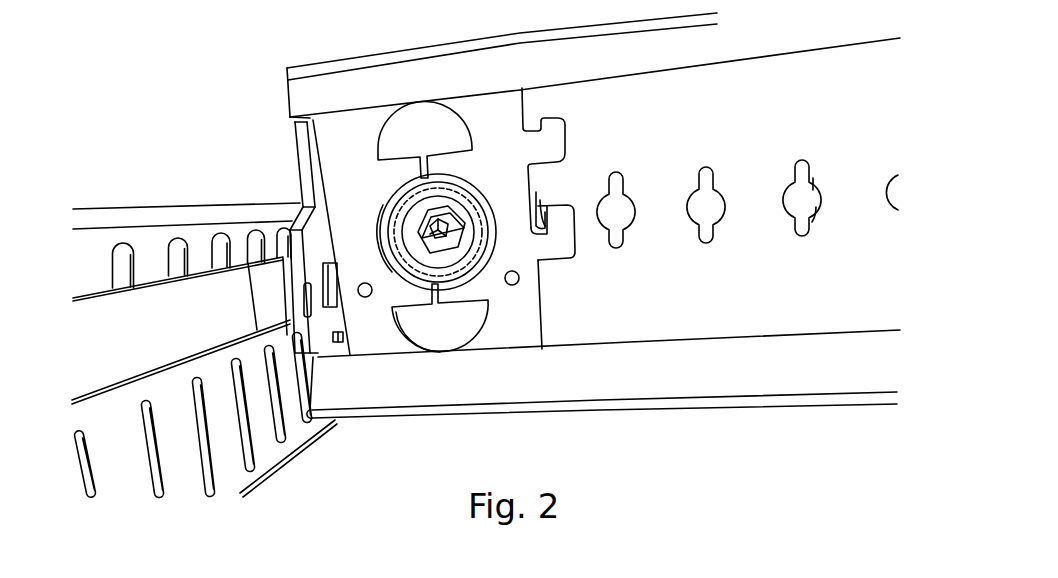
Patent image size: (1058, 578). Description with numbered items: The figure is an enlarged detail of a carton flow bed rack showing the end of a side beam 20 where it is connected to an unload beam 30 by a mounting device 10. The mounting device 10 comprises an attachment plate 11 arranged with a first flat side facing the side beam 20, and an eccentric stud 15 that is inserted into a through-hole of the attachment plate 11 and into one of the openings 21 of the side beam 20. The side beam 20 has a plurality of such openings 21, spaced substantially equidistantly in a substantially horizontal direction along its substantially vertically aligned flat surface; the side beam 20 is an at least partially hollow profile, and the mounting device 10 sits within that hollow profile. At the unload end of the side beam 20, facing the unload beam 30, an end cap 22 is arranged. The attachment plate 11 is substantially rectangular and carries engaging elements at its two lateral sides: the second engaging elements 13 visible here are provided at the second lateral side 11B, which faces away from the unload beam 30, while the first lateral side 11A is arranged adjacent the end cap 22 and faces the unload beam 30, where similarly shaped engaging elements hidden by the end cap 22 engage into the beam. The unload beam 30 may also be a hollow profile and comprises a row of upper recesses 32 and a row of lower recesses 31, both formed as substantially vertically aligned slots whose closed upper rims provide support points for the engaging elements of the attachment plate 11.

The mounting device 10 is at (350, 138).
The attachment plate 11 is at (532, 329).
The first lateral side of the attachment plate 11A is at (333, 206).
The second lateral side of the attachment plate 11B is at (538, 288).
The second engaging elements 13 is at (562, 143).
The eccentric stud 15 is at (450, 206).
The side beam 20 is at (738, 385).
The openings 21 is at (622, 207).
The end cap 22 is at (302, 163).
The unload beam 30 is at (123, 325).
The lower recesses 31 is at (207, 470).
The upper recesses 32 is at (173, 242).